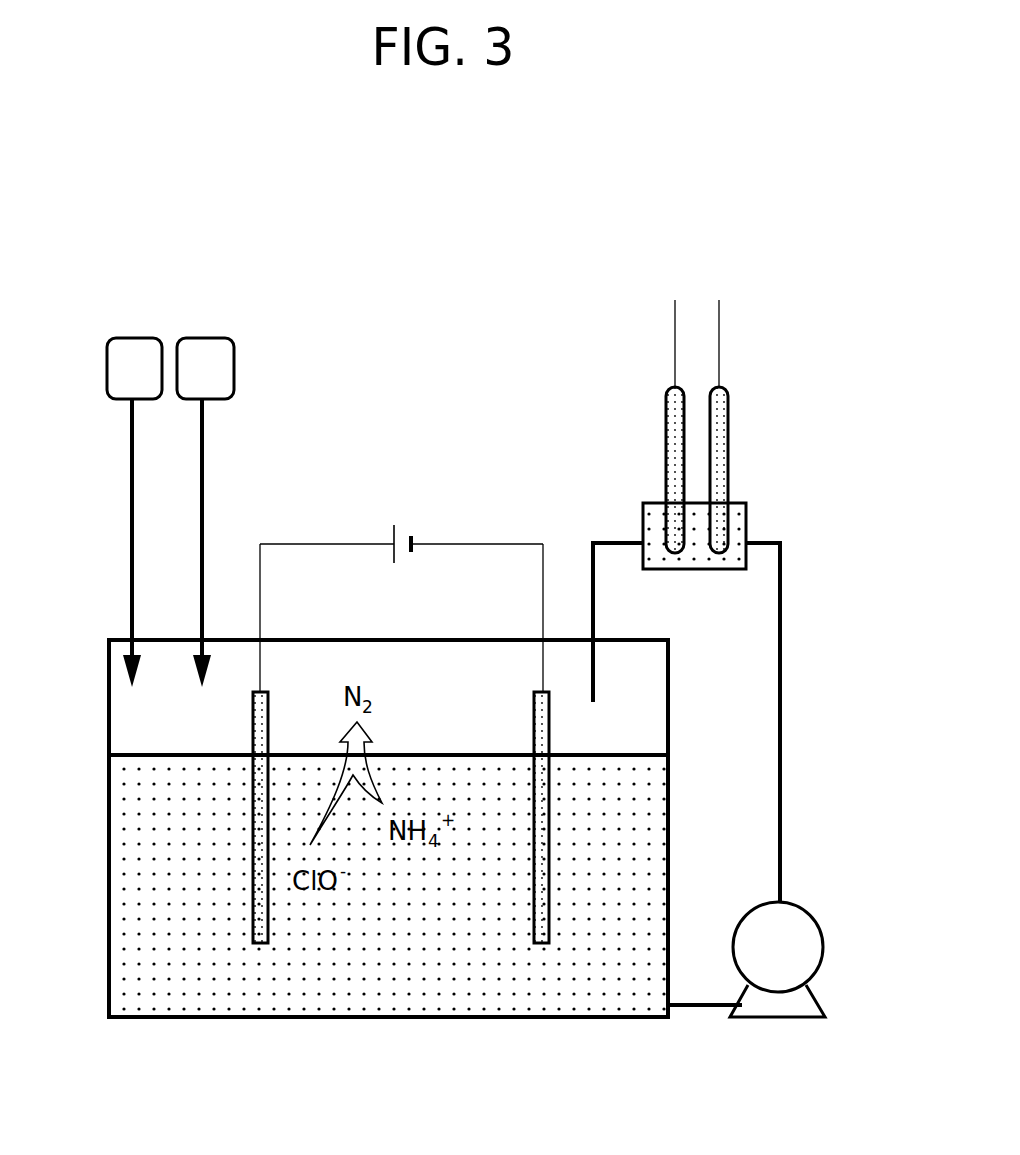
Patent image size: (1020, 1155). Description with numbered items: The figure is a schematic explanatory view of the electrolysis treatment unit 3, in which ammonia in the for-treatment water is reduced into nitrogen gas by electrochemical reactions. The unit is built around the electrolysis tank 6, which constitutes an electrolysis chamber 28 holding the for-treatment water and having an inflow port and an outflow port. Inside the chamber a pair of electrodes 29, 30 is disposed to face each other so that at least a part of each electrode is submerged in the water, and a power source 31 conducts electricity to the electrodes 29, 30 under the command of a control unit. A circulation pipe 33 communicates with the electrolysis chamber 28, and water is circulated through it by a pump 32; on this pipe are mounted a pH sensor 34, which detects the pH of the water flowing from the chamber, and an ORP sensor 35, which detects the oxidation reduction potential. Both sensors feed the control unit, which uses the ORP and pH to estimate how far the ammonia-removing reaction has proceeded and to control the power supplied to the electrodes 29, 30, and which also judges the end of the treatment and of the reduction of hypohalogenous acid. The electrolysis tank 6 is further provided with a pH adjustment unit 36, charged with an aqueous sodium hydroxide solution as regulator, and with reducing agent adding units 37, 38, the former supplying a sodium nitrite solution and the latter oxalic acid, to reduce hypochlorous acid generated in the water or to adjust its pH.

The electrolysis treatment unit 3 is at (465, 338).
The electrolysis tank 6 is at (108, 719).
The electrolysis chamber 28 is at (488, 727).
The electrode 29 is at (253, 877).
The electrode 30 is at (549, 815).
The power source 31 is at (402, 518).
The pump 32 is at (810, 932).
The circulation pipe 33 is at (781, 708).
The pH sensor 34 is at (670, 428).
The ORP sensor 35 is at (726, 426).
The pH adjustment unit 36 is at (130, 335).
The reducing agent adding unit 37 is at (207, 475).
The reducing agent adding unit 38 is at (202, 335).